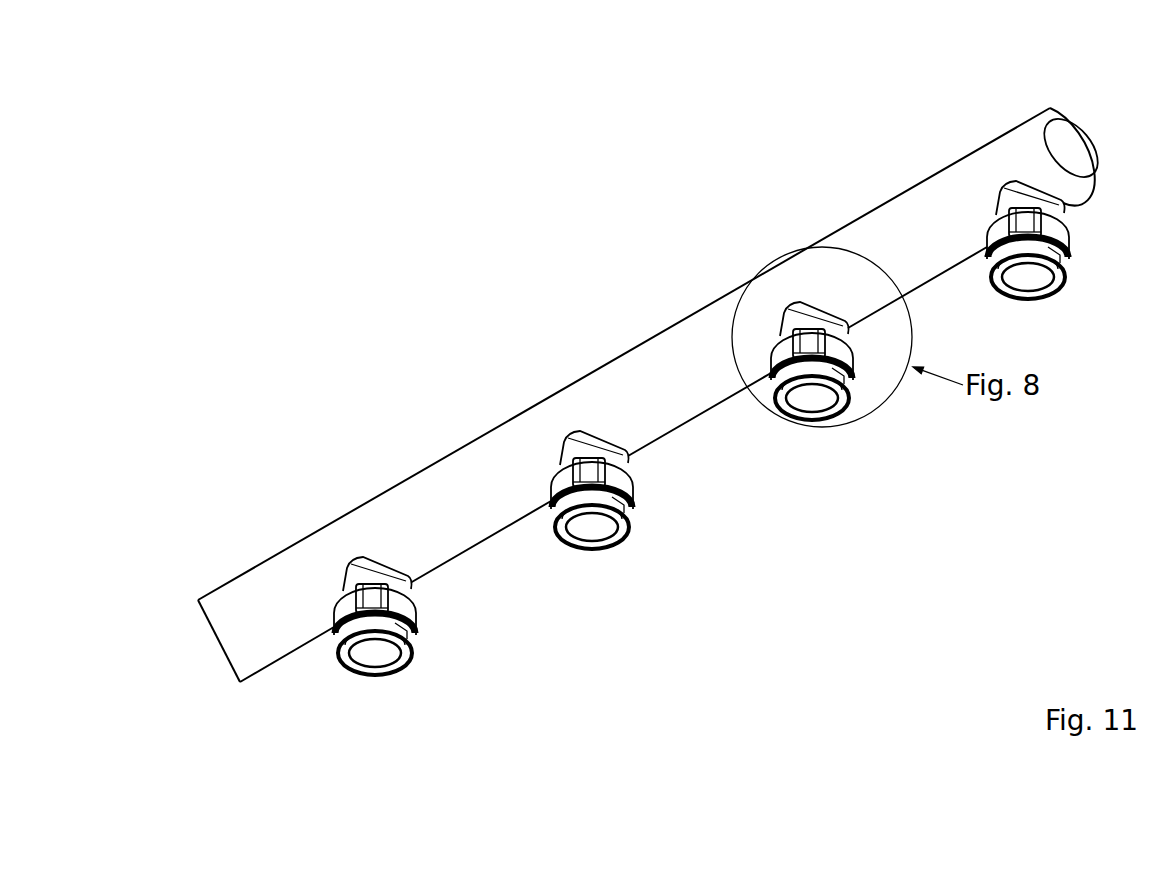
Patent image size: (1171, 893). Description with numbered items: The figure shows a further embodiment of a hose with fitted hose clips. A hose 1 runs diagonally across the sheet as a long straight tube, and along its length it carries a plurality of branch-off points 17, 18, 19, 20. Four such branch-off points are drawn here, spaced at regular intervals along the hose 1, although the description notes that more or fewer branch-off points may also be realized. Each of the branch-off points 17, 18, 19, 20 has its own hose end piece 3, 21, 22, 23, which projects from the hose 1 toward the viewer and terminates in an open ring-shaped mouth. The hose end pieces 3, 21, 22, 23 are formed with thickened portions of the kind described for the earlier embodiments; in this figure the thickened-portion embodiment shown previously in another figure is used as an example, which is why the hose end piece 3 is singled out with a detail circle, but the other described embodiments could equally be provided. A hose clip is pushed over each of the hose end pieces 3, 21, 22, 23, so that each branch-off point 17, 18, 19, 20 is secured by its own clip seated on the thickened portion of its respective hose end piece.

The hose 1 is at (262, 575).
The hose end piece 3 is at (814, 335).
The branch-off point 17 is at (351, 514).
The branch-off point 18 is at (569, 386).
The branch-off point 19 is at (784, 261).
The branch-off point 20 is at (1006, 133).
The hose end piece 21 is at (398, 556).
The hose end piece 22 is at (614, 428).
The hose end piece 23 is at (1048, 176).